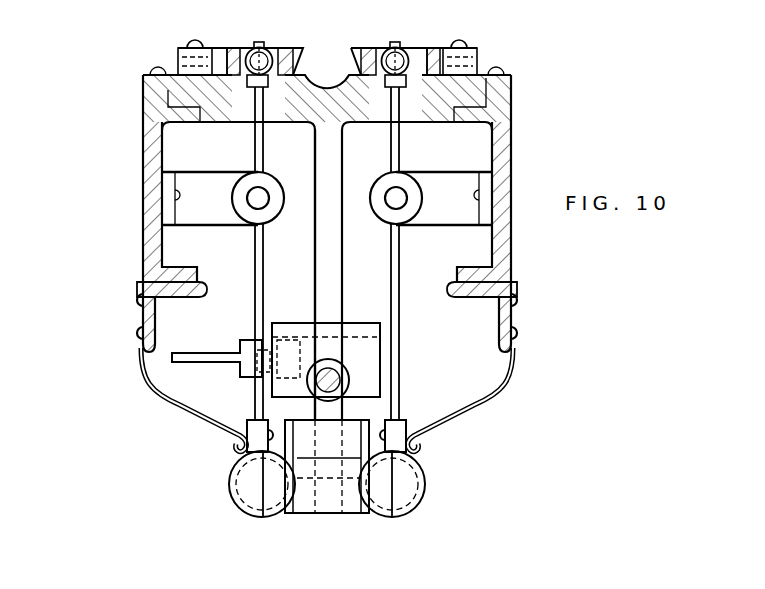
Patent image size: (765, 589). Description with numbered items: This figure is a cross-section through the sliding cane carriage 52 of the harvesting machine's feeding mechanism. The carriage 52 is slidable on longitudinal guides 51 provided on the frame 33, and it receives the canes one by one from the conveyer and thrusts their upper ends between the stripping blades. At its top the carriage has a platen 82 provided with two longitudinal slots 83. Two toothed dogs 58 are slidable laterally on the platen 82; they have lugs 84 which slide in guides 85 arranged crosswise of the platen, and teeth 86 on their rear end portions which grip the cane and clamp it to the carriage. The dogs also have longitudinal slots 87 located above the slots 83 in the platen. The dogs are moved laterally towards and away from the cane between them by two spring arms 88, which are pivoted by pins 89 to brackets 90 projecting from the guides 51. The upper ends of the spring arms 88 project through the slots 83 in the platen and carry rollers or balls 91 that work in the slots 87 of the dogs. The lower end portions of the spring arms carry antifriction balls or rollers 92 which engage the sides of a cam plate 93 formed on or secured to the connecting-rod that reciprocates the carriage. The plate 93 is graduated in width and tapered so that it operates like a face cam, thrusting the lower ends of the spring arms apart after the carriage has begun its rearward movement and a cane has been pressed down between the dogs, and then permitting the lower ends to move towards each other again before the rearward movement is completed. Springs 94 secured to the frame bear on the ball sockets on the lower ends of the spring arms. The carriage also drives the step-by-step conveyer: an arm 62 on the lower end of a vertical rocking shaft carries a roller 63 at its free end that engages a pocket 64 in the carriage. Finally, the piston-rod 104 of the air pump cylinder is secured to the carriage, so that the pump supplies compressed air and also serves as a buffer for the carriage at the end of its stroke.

The frame 33 is at (150, 205).
The longitudinal guides 51 is at (163, 93).
The carriage 52 is at (333, 268).
The toothed dogs 58 is at (282, 47).
The arm 62 is at (193, 352).
The roller 63 is at (268, 357).
The pocket 64 is at (348, 335).
The platen 82 is at (222, 116).
The longitudinal slots 83 is at (278, 106).
The lugs 84 is at (178, 47).
The guides 85 is at (178, 60).
The teeth 86 is at (303, 50).
The longitudinal slots 87 is at (236, 50).
The spring arms 88 is at (264, 258).
The pins 89 is at (256, 203).
The brackets 90 is at (210, 217).
The rollers or balls 91 is at (258, 58).
The antifriction balls or rollers 92 is at (244, 478).
The cam plate 93 is at (326, 466).
The springs 94 is at (222, 414).
The piston-rod 104 is at (350, 381).